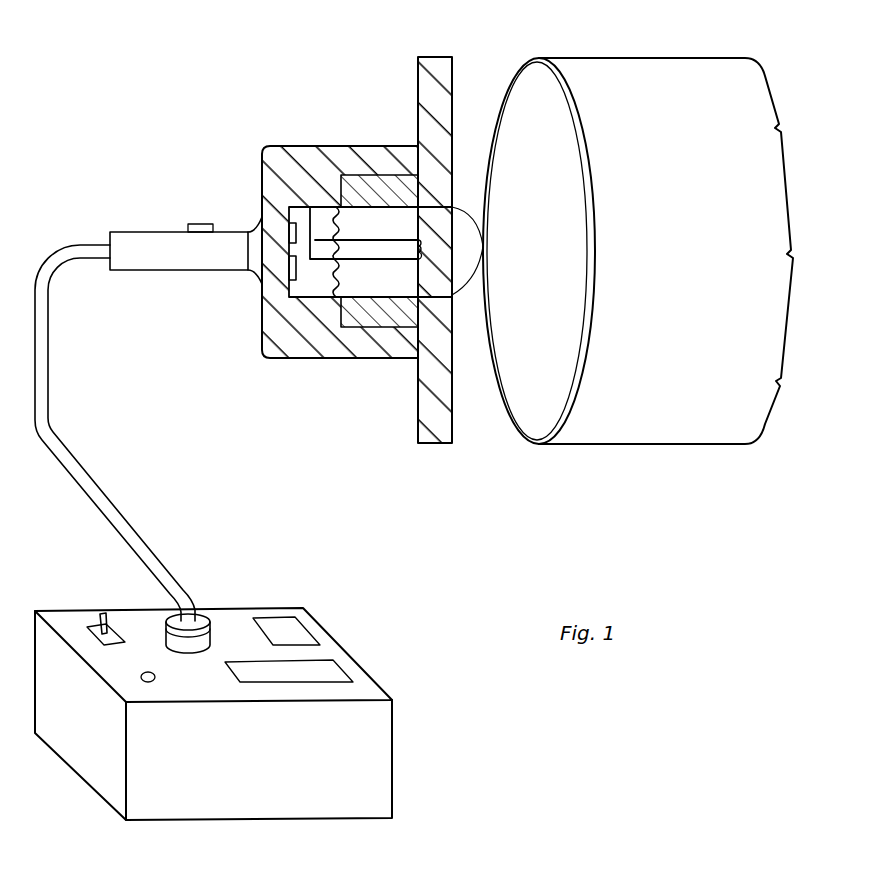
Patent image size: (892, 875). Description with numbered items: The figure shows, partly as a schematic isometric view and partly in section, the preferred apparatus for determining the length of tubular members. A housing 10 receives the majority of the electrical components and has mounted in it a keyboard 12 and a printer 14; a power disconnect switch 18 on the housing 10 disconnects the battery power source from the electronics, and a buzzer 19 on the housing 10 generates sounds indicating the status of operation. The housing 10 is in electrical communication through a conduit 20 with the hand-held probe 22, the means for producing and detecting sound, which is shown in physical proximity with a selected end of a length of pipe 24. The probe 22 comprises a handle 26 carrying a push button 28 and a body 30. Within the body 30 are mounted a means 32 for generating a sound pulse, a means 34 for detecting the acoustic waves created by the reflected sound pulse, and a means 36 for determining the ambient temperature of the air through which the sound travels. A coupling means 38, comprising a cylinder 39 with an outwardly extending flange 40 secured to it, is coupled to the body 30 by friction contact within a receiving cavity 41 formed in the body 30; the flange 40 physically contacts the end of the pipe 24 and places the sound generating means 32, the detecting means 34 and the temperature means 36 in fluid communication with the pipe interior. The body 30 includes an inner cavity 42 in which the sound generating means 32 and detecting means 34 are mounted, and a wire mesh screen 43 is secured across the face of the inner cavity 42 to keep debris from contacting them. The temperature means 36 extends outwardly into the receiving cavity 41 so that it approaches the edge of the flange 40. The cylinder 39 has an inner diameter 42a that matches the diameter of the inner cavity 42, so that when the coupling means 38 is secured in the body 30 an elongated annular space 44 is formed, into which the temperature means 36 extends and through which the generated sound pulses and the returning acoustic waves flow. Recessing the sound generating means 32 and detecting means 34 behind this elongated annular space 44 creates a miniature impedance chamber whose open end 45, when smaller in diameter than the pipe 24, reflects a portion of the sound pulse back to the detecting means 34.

The housing 10 is at (312, 615).
The keyboard 12 is at (284, 618).
The printer 14 is at (335, 676).
The power disconnect switch 18 is at (97, 629).
The buzzer 19 is at (153, 675).
The conduit 20 is at (47, 405).
The hand-held probe 22 is at (350, 230).
The pipe 24 is at (638, 251).
The handle 26 is at (135, 232).
The push button 28 is at (205, 224).
The body 30 is at (276, 146).
The means for generating a sound pulse 32 is at (291, 233).
The means for detecting acoustic waves 34 is at (291, 266).
The means for determining air temperature 36 is at (428, 247).
The coupling means 38 is at (456, 98).
The cylinder 39 is at (384, 190).
The flange 40 is at (425, 80).
The receiving cavity 41 is at (355, 315).
The inner cavity 42 is at (308, 293).
The inner diameter 42a is at (395, 300).
The wire mesh screen 43 is at (330, 207).
The elongated annular space 44 is at (385, 235).
The open end 45 is at (485, 246).